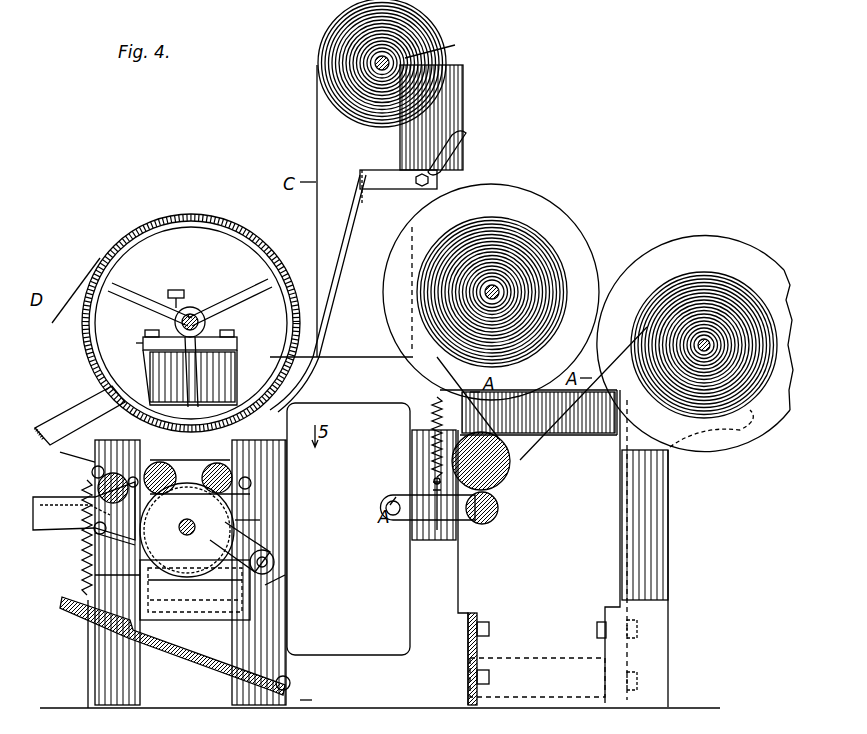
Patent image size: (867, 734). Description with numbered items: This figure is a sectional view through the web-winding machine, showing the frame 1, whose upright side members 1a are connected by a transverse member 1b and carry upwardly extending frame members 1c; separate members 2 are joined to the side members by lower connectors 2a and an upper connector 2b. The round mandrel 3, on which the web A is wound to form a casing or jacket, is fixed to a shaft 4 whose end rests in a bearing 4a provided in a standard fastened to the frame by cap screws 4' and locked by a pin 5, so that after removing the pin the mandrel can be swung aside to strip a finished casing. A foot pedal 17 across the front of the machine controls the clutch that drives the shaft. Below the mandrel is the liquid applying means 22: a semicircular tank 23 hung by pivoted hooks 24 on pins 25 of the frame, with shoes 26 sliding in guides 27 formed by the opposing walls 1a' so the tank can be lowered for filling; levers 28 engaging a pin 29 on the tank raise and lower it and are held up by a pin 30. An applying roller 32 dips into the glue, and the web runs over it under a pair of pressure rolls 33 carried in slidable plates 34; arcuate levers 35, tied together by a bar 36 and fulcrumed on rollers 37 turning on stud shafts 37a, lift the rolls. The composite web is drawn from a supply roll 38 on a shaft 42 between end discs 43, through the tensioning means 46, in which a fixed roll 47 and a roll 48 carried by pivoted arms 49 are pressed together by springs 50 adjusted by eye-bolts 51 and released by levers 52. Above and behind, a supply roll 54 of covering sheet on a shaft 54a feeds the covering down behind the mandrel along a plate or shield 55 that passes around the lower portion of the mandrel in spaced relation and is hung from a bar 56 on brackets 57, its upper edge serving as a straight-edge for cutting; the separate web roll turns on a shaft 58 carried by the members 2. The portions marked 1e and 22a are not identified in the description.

The frame 1 is at (380, 386).
The upright side members 1a is at (291, 582).
The opposing walls of frame members 1a' is at (67, 537).
The transverse member 1b is at (466, 646).
The upwardly extending frame members 1c is at (445, 105).
The frame base 1e is at (335, 692).
The separate frame members 2 is at (632, 548).
The lower connectors 2a is at (537, 677).
The upper connector 2b is at (590, 437).
The mandrel 3 is at (191, 322).
The shaft 4 is at (193, 359).
The bearing 4a is at (230, 337).
The cap screws 4' is at (123, 339).
The pin 5 is at (185, 298).
The foot pedal 17 is at (70, 605).
The liquid applying means 22 is at (187, 530).
The drum hub 22a is at (203, 524).
The tank 23 is at (195, 590).
The pivoted hooks 24 is at (252, 496).
The pins 25 is at (284, 482).
The shoes 26 is at (262, 522).
The guides 27 is at (195, 610).
The levers 28 is at (117, 579).
The pin 29 is at (195, 589).
The pin 30 is at (115, 534).
The applying roller 32 is at (240, 535).
The pressure rolls 33 is at (169, 477).
The plates 34 is at (235, 462).
The levers 35 is at (82, 405).
The bar 36 is at (75, 455).
The rollers 37 is at (100, 482).
The stud shafts 37a is at (68, 463).
The source of supply 38 is at (519, 292).
The shaft 42 is at (495, 293).
The end plates or discs 43 is at (565, 222).
The tensioning means 46 is at (453, 523).
The roll 47 is at (510, 478).
The roll 48 is at (498, 510).
The arms 49 is at (439, 526).
The springs 50 is at (432, 423).
The eye-bolts 51 is at (430, 480).
The levers 52 is at (468, 150).
The supply roll 54 is at (388, 63).
The shaft 54a is at (447, 42).
The supporting plate or shield 55 is at (325, 312).
The bar 56 is at (368, 189).
The brackets 57 is at (378, 170).
The shaft 58 is at (706, 343).